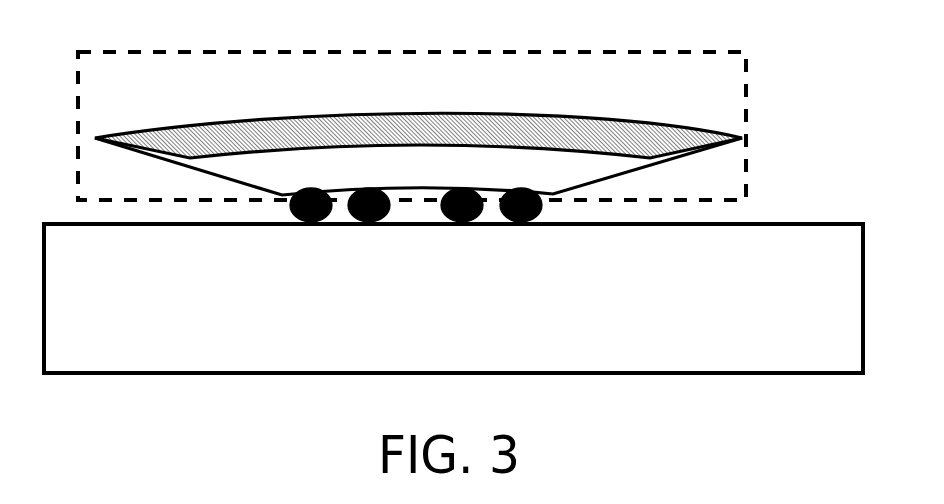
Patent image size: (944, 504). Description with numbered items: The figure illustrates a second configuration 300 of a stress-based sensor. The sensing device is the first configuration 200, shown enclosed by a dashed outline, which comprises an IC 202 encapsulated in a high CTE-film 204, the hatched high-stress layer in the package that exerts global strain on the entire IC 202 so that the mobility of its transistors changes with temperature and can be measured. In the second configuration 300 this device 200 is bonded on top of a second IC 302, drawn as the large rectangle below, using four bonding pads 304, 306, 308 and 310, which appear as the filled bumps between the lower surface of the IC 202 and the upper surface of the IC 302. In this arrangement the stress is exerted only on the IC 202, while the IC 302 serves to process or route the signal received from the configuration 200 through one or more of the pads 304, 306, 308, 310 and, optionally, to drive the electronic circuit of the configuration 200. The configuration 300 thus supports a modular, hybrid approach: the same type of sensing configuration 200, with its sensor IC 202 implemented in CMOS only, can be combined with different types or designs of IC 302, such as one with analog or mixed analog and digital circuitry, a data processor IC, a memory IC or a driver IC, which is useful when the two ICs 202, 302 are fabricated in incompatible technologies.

The first configuration 200 is at (93, 188).
The IC 202 is at (295, 172).
The high CTE-film 204 is at (493, 132).
The second configuration 300 is at (457, 293).
The second IC 302 is at (825, 240).
The bonding pad 304 is at (323, 225).
The bonding pad 306 is at (382, 225).
The bonding pad 308 is at (475, 225).
The bonding pad 310 is at (535, 225).